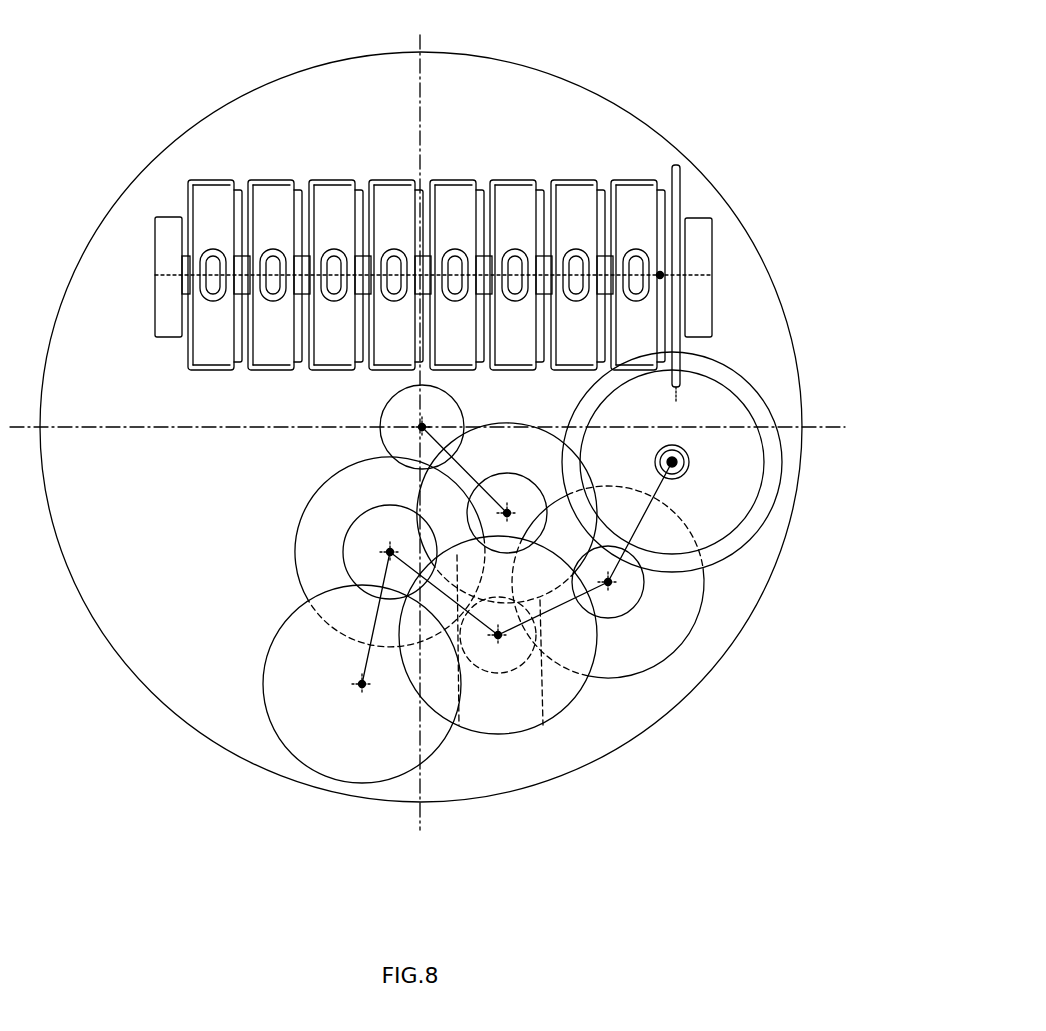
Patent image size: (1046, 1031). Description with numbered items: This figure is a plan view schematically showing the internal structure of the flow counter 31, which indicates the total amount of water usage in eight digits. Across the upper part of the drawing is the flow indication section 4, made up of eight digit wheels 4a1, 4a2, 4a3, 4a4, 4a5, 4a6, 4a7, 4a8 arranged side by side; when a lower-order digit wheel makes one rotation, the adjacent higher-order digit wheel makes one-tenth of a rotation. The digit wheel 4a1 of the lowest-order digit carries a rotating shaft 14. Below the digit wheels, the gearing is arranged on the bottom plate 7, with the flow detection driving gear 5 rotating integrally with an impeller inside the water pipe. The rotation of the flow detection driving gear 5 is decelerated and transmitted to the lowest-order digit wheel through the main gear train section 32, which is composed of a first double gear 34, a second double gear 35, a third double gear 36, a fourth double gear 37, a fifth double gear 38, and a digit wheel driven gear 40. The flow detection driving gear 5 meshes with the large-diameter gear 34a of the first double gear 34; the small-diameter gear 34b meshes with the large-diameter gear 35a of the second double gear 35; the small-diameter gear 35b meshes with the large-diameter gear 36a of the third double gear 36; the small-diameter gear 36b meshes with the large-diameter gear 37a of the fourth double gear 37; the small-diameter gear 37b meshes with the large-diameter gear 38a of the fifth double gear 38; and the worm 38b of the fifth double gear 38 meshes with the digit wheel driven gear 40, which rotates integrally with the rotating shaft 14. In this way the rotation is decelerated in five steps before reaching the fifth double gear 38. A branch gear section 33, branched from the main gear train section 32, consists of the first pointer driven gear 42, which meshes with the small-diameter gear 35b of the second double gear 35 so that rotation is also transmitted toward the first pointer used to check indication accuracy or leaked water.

The flow indication section 4 is at (177, 205).
The digit wheel 4a1 is at (643, 197).
The digit wheel 4a2 is at (577, 197).
The digit wheel 4a3 is at (518, 197).
The digit wheel 4a4 is at (455, 197).
The digit wheel 4a5 is at (397, 197).
The digit wheel 4a6 is at (335, 197).
The digit wheel 4a7 is at (277, 197).
The digit wheel 4a8 is at (215, 197).
The flow detection driving gear 5 is at (385, 422).
The bottom plate 7 is at (122, 637).
The rotating shaft 14 is at (185, 262).
The flow counter 31 is at (683, 145).
The main gear train section 32 is at (633, 675).
The branch gear section 33 is at (297, 742).
The first double gear 34 is at (497, 447).
The large-diameter gear 34a is at (527, 445).
The small-diameter gear 34b is at (655, 462).
The second double gear 35 is at (320, 512).
The large-diameter gear 35a is at (340, 487).
The small-diameter gear 35b is at (345, 550).
The third double gear 36 is at (530, 713).
The large-diameter gear 36a is at (497, 732).
The small-diameter gear 36b is at (582, 738).
The fourth double gear 37 is at (653, 647).
The large-diameter gear 37a is at (685, 655).
The small-diameter gear 37b is at (680, 622).
The fifth double gear 38 is at (760, 485).
The large-diameter gear 38a is at (760, 528).
The worm 38b is at (740, 418).
The digit wheel driven gear 40 is at (733, 368).
The first pointer driven gear 42 is at (357, 713).